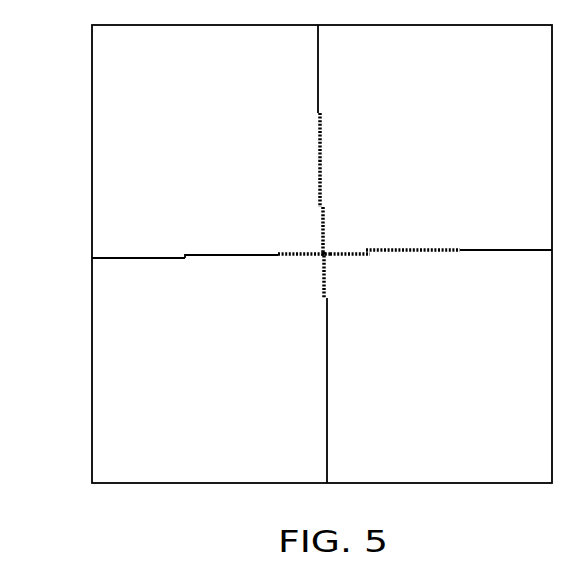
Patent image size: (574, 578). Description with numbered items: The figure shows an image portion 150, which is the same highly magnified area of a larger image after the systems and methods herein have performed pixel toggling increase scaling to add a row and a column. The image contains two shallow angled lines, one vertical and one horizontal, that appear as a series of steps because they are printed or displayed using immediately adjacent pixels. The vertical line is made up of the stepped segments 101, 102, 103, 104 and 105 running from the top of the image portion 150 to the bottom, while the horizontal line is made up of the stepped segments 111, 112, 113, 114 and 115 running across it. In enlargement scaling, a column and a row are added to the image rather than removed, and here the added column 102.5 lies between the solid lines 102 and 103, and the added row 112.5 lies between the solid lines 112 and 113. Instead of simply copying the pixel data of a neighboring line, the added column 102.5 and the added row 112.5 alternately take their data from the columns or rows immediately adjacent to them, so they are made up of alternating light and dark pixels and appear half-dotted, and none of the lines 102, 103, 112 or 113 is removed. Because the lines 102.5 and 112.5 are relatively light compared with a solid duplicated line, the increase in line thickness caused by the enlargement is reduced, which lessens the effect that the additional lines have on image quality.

The image portion 150 is at (92, 178).
The vertical line segment 101 is at (318, 82).
The solid vertical line 102 is at (318, 137).
The half-dotted vertical line 102.5 is at (322, 165).
The solid vertical line 103 is at (327, 220).
The vertical line segment 104 is at (328, 367).
The vertical line segment 105 is at (328, 432).
The horizontal line segment 111 is at (495, 250).
The solid horizontal line 112 is at (420, 250).
The half-dotted horizontal line 112.5 is at (415, 252).
The solid horizontal line 113 is at (287, 256).
The horizontal line segment 114 is at (210, 258).
The horizontal line segment 115 is at (128, 258).